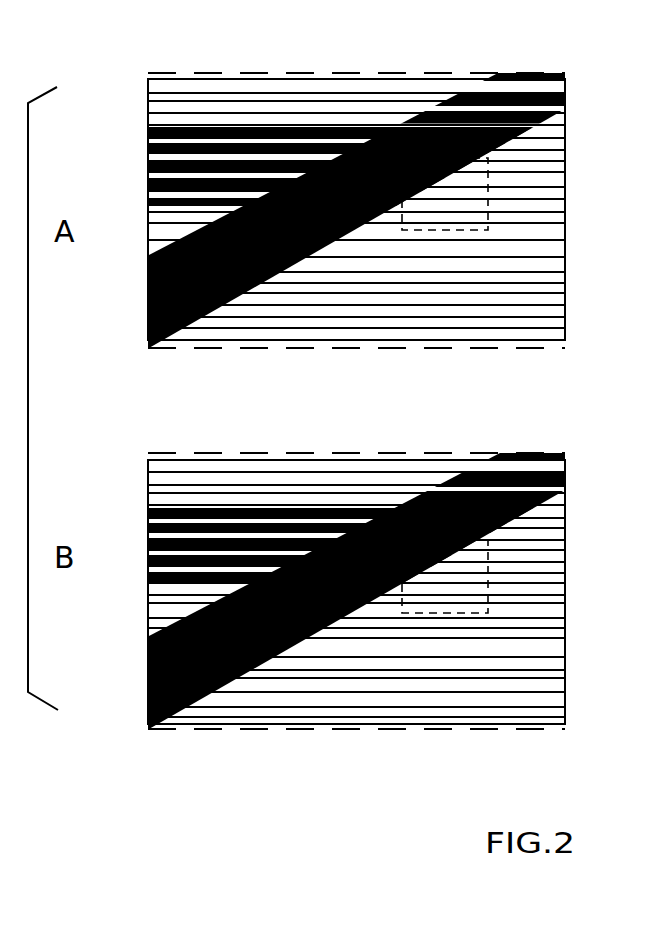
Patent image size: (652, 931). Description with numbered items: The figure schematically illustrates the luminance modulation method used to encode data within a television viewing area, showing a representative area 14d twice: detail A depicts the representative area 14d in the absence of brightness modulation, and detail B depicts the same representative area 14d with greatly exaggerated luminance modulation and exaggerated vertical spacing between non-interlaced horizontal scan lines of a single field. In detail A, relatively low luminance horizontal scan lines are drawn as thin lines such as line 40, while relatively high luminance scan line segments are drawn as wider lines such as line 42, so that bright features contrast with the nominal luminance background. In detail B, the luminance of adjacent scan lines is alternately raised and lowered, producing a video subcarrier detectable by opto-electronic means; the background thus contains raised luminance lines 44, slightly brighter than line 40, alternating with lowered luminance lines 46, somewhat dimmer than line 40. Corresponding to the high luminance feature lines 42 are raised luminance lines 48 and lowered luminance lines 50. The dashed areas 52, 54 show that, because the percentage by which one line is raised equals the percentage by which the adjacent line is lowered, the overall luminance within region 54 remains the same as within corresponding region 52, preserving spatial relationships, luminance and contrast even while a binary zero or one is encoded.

The representative area 14d is at (272, 775).
The relatively low luminance horizontal scan line 40 is at (565, 257).
The relatively high luminance horizontal scan line segment 42 is at (147, 150).
The raised luminance horizontal scan line 44 is at (565, 636).
The lowered luminance horizontal scan line 46 is at (565, 657).
The raised luminance line 48 is at (145, 528).
The lowered luminance line 50 is at (145, 550).
The area 52 is at (479, 193).
The area 54 is at (483, 589).